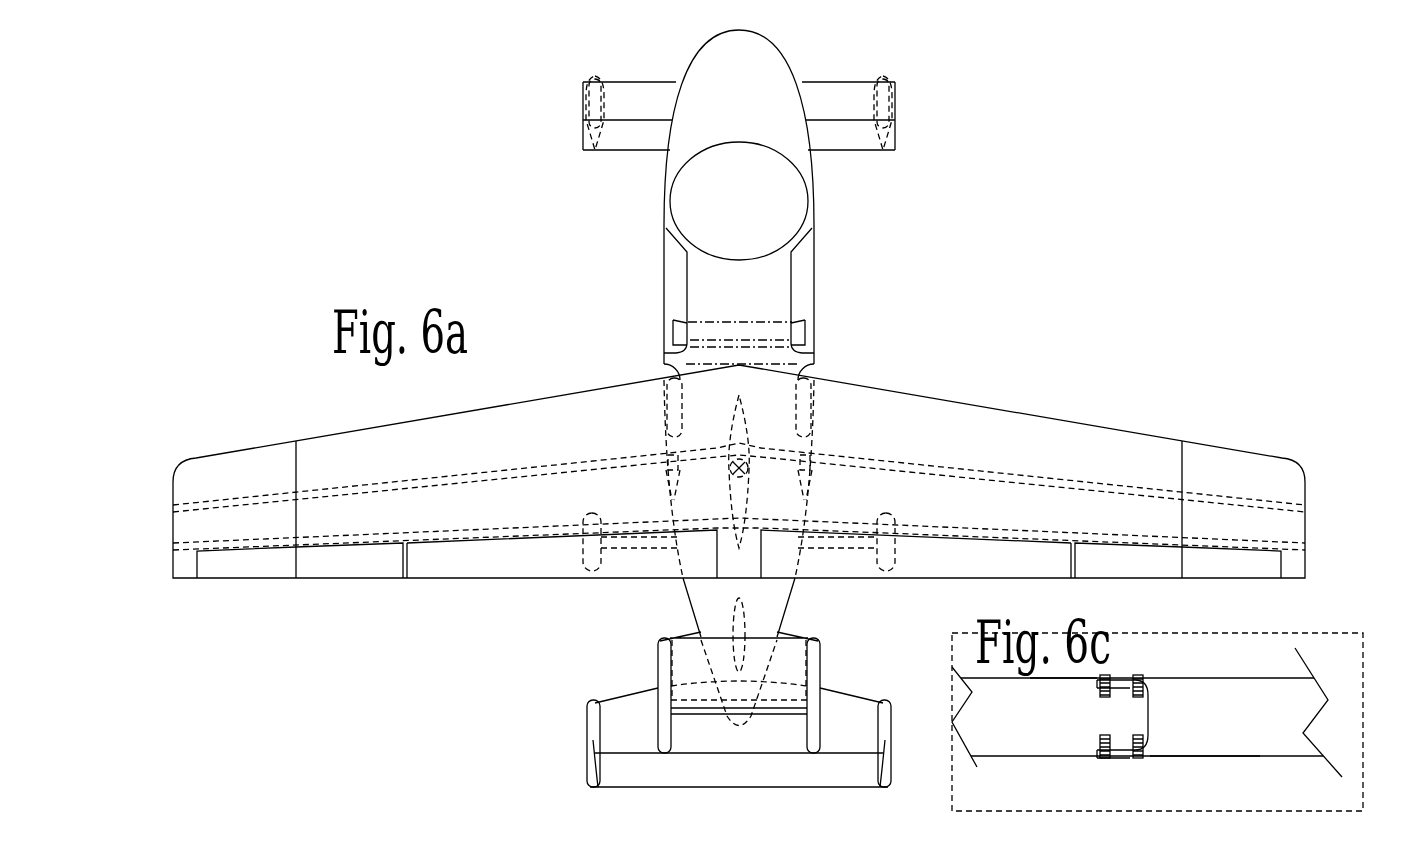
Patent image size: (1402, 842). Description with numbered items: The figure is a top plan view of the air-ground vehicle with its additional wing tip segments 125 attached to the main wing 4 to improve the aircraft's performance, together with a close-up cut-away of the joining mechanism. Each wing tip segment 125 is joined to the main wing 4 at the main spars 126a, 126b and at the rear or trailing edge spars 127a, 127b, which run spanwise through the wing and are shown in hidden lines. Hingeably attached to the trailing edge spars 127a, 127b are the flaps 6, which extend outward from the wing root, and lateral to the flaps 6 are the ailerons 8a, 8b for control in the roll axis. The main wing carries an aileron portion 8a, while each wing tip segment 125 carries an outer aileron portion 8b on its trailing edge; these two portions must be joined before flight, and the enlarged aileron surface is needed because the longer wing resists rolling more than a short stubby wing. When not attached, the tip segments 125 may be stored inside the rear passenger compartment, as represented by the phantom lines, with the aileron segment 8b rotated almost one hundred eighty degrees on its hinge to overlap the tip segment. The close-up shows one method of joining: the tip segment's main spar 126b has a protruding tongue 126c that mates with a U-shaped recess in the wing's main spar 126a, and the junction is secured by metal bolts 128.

In FIG. 6A, the main wing 4 is at (360, 452).
In FIG. 6C, the main wing 4 is at (1231, 766).
In FIG. 6A, the flaps 6 is at (455, 568).
In FIG. 6A, the main wing aileron portion 8a is at (333, 568).
In FIG. 6A, the outer aileron portion 8b is at (238, 568).
In FIG. 6A, the wing tip segment 125 is at (212, 486).
In FIG. 6C, the wing tip segment 125 is at (1021, 757).
In FIG. 6A, the wing's main spar 126a is at (418, 479).
In FIG. 6C, the wing's main spar 126a is at (1262, 746).
In FIG. 6A, the wing tip segment main spar 126b is at (247, 502).
In FIG. 6C, the wing tip segment main spar 126b is at (1030, 745).
In FIG. 6C, the protruding tongue 126c is at (1117, 736).
In FIG. 6A, the trailing edge spar 127a is at (351, 538).
In FIG. 6A, the trailing edge spar 127b is at (207, 548).
In FIG. 6C, the metal bolts 128 is at (1140, 676).